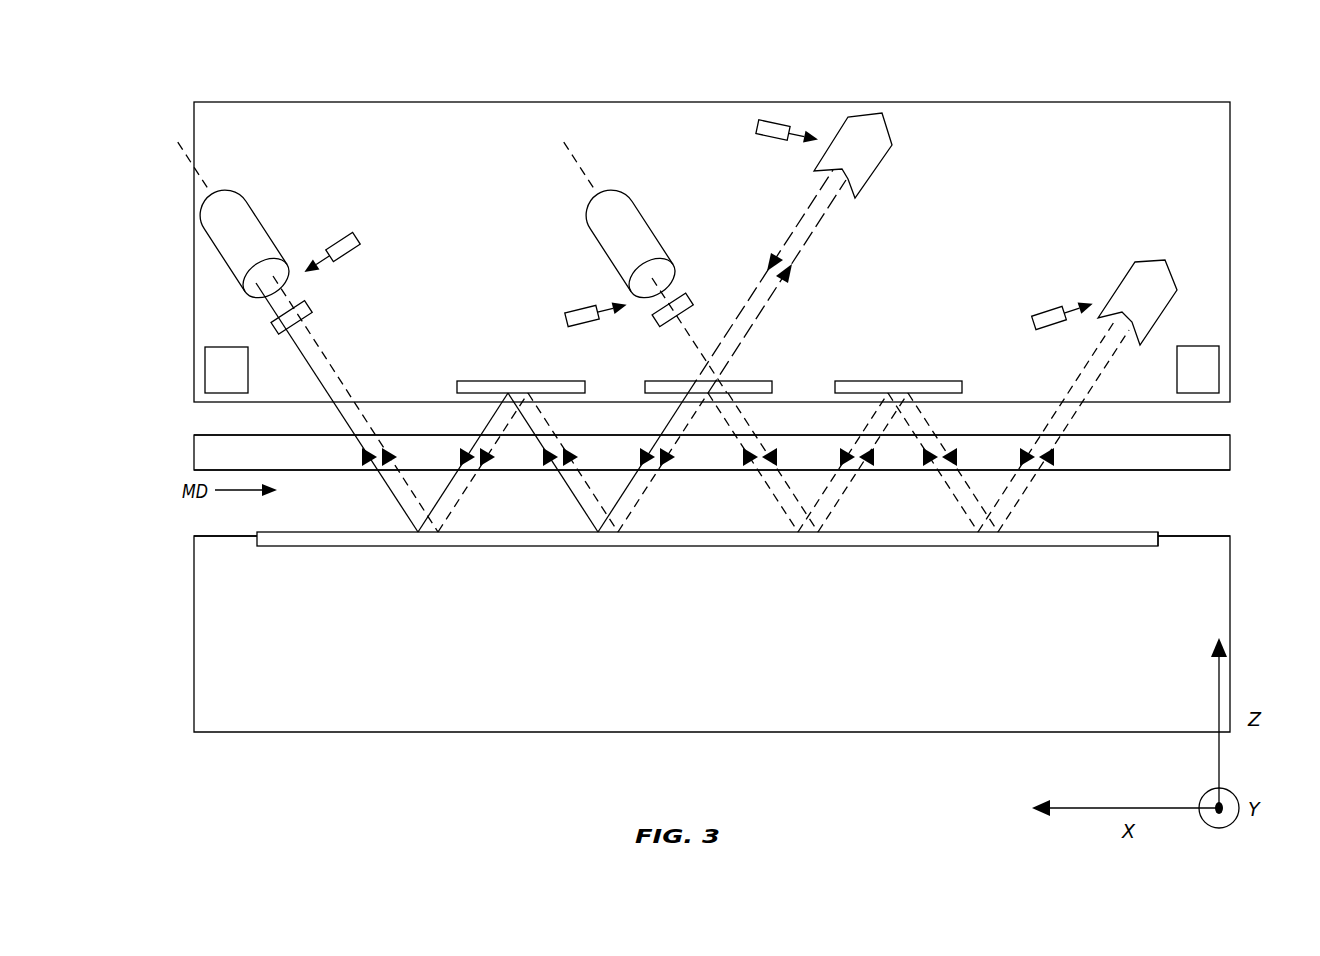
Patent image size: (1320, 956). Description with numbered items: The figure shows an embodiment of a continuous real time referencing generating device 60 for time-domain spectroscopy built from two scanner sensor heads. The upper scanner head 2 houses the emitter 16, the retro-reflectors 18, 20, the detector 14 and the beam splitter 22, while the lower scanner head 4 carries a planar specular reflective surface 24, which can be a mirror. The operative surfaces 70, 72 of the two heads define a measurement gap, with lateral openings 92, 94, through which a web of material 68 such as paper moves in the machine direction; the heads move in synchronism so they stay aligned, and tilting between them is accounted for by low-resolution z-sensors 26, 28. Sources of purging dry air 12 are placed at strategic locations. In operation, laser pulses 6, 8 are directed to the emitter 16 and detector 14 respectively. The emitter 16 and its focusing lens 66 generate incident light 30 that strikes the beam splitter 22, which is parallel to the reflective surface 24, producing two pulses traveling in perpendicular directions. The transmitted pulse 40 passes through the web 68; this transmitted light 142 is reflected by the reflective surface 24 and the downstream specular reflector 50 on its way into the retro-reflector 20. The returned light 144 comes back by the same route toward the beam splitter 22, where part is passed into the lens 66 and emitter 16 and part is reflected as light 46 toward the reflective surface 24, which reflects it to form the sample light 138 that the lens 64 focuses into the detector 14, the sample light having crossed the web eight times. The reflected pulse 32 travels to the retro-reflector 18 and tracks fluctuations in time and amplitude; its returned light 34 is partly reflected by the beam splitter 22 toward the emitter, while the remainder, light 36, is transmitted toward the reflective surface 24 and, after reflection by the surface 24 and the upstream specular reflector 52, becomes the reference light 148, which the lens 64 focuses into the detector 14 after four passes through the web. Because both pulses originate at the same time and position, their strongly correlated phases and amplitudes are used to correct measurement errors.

The upper scanner head 2 is at (376, 139).
The lower scanner head 4 is at (376, 712).
The laser pulse 6 is at (575, 155).
The laser pulse 8 is at (205, 175).
The source of purging dry air 12 is at (362, 233).
The detector 14 is at (273, 232).
The emitter 16 is at (643, 213).
The retro-reflector 18 is at (885, 160).
The retro-reflector 20 is at (1122, 282).
The beam splitter 22 is at (645, 385).
The reflective surface 24 is at (1043, 547).
The z-sensor 26 is at (248, 373).
The z-sensor 28 is at (1177, 373).
The incident light 30 is at (692, 337).
The reflected pulse 32 is at (818, 227).
The returned light 34 is at (807, 208).
The transmitted light 36 is at (667, 423).
The transmitted pulse 40 is at (752, 427).
The reflected light 46 is at (635, 505).
The specular reflector 50 is at (965, 385).
The specular reflector 52 is at (457, 385).
The continuous real time referencing generating device 60 is at (170, 424).
The lens 64 is at (308, 307).
The focusing lens 66 is at (693, 295).
The web of material 68 is at (1137, 472).
The operative surface 70 is at (1133, 403).
The operative surface 72 is at (1172, 535).
The lateral opening 92 is at (167, 537).
The lateral opening 94 is at (1249, 537).
The sample light 138 is at (337, 410).
The transmitted light 142 is at (1020, 503).
The returned light 144 is at (762, 477).
The reference light 148 is at (317, 340).